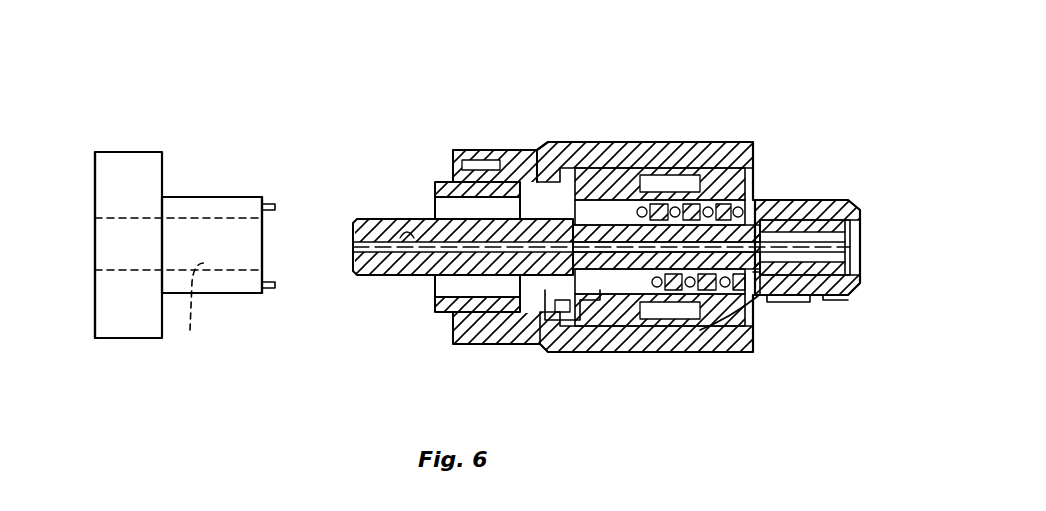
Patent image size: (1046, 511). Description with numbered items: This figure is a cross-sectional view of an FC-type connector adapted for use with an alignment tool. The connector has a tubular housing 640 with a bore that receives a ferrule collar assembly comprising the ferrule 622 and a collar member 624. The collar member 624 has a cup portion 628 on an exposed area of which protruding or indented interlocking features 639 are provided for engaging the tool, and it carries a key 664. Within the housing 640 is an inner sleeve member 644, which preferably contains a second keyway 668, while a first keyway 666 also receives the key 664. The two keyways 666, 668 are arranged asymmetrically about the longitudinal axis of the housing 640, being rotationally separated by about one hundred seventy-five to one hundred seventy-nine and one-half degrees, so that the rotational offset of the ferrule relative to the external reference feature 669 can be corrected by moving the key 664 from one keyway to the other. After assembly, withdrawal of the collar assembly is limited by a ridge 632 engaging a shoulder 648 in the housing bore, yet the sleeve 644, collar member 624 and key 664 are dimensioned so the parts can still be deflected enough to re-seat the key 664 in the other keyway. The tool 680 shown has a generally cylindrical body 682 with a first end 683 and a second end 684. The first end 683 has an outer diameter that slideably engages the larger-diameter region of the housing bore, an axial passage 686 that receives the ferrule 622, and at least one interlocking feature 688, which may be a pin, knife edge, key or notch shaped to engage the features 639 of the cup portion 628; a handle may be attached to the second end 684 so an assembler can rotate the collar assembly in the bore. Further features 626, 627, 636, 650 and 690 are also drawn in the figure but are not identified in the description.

The ferrule 622 is at (387, 222).
The collar member 624 is at (836, 198).
The optical fiber 626 is at (406, 239).
The ferrule bore end 627 is at (832, 252).
The cup portion 628 is at (545, 290).
The ridge 632 is at (805, 222).
The lower spring 636 is at (695, 290).
The interlocking features 639 is at (509, 170).
The tubular housing 640 is at (826, 312).
The inner sleeve member 644 is at (719, 198).
The shoulder 648 is at (759, 274).
The connector body 650 is at (585, 148).
The key 664 is at (620, 200).
The first keyway 666 is at (651, 198).
The second keyway 668 is at (628, 292).
The external reference feature 669 is at (496, 167).
The tool 680 is at (224, 192).
The generally cylindrical body 682 is at (184, 205).
The first end 683 is at (265, 262).
The second end 684 is at (93, 282).
The axial passage 686 is at (188, 310).
The interlocking feature 688 is at (272, 203).
The mounting plate 690 is at (123, 150).